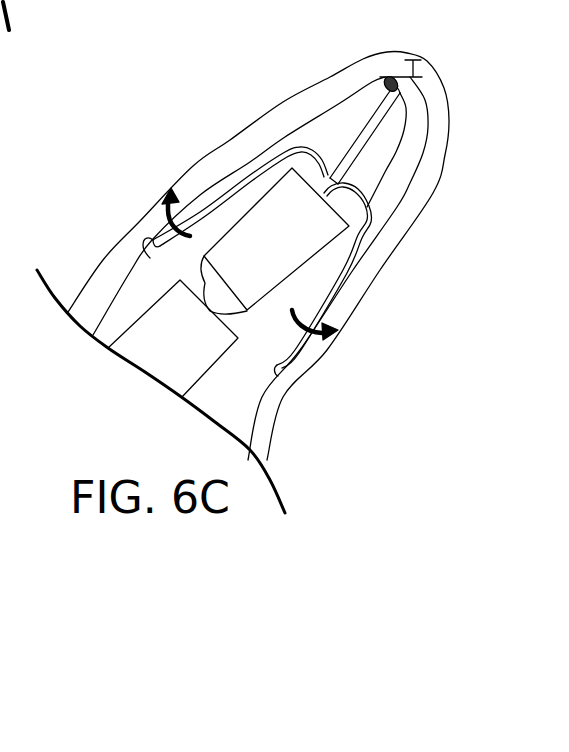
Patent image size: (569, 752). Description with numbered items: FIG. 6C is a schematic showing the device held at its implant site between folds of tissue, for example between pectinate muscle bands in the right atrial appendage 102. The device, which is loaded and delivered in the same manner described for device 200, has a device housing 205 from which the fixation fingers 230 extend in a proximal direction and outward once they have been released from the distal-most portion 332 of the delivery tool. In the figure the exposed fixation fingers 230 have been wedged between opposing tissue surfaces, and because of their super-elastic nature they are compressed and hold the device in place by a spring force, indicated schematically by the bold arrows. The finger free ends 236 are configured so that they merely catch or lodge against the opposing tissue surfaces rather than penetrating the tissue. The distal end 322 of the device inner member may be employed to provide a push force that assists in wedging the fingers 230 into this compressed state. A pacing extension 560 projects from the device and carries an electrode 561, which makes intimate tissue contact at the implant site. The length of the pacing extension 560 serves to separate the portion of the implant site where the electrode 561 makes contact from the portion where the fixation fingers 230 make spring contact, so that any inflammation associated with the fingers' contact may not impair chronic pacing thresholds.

The right atrial appendage 102 is at (290, 98).
The device 200 is at (196, 248).
The device housing 205 is at (293, 247).
The fixation fingers 230 is at (300, 118).
The finger free ends 236 is at (150, 242).
The distal end of device inner member 322 is at (203, 282).
The distal-most portion 332 is at (192, 352).
The pacing extension 560 is at (388, 132).
The electrode 561 is at (384, 80).